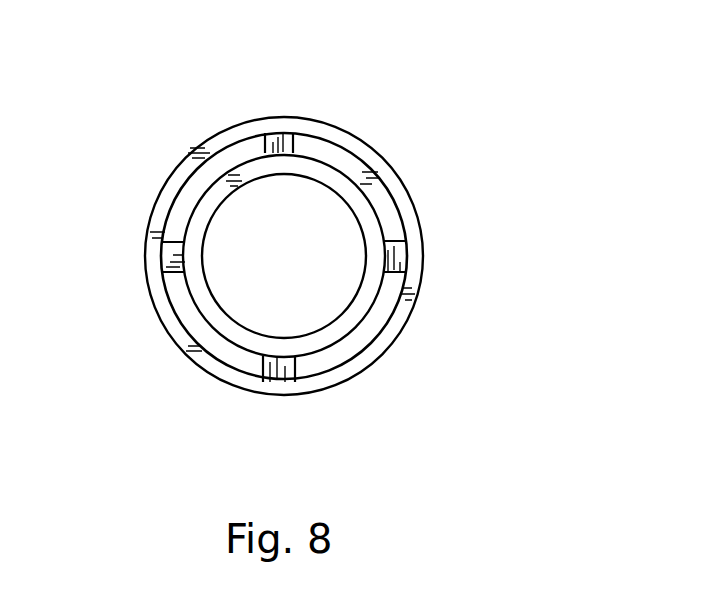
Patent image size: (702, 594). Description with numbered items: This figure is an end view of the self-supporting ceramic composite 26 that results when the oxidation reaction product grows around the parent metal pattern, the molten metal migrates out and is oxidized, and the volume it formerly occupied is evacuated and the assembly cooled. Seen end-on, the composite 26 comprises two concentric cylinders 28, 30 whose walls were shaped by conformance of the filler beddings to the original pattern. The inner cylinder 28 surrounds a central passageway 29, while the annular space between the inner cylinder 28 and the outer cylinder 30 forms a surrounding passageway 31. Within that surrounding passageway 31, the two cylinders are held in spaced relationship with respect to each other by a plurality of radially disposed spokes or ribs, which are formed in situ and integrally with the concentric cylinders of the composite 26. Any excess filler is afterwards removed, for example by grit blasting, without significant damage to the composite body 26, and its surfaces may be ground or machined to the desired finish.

The ceramic composite 26 is at (152, 155).
The concentric cylinder 28 is at (370, 237).
The central passageway 29 is at (322, 263).
The concentric cylinder 30 is at (400, 327).
The surrounding passageway 31 is at (372, 181).